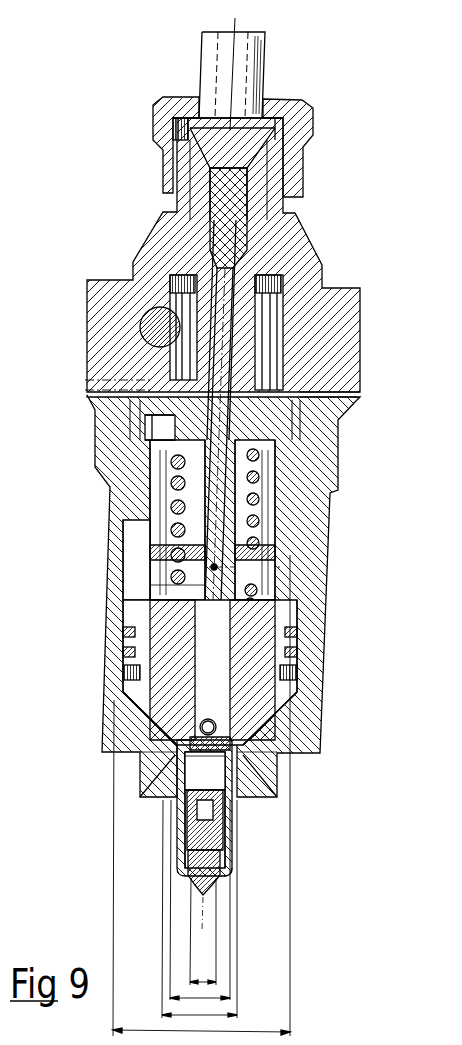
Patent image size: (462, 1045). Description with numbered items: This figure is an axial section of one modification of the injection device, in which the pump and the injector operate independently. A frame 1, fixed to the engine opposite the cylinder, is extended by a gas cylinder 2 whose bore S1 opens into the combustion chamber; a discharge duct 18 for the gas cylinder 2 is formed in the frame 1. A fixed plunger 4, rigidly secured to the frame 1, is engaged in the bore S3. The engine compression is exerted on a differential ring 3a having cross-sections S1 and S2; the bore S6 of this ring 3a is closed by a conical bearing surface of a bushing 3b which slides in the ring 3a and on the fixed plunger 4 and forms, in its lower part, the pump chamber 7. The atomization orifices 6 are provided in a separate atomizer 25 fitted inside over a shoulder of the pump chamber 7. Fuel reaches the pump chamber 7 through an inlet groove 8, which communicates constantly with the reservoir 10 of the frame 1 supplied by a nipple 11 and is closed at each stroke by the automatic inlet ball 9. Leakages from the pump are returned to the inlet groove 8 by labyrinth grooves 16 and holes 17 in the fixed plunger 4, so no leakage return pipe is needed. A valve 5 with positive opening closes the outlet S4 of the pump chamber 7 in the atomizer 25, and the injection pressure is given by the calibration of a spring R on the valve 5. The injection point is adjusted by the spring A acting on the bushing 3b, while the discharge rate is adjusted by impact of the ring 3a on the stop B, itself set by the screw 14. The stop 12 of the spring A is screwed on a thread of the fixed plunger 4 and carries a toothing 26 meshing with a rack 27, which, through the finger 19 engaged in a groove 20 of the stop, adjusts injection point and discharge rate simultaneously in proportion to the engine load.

The frame 1 is at (160, 237).
The gas cylinder 2 is at (123, 529).
The differential ring 3a is at (123, 673).
The bushing 3b is at (130, 627).
The fixed plunger 4 is at (212, 190).
The valve 5 is at (183, 830).
The atomization orifices 6 is at (197, 887).
The pump chamber 7 is at (195, 780).
The inlet groove 8 is at (207, 698).
The automatic inlet ball 9 is at (200, 733).
The reservoir 10 is at (177, 164).
The nipple 11 is at (222, 90).
The stop of the spring A 12 is at (140, 317).
The screw 14 is at (147, 462).
The labyrinth grooves 16 is at (157, 553).
The holes 17 is at (213, 568).
The discharge duct 18 is at (150, 370).
The finger 19 is at (147, 422).
The groove 20 is at (150, 390).
The atomizer 25 is at (190, 848).
The toothing 26 is at (172, 295).
The rack 27 is at (150, 320).
The spring A is at (147, 497).
The stop B is at (170, 587).
The spring R is at (200, 863).
The bore S1 is at (199, 911).
The cross-section S2 is at (201, 797).
The bore S3 is at (205, 771).
The outlet S4 is at (203, 934).
The bore S6 is at (200, 902).